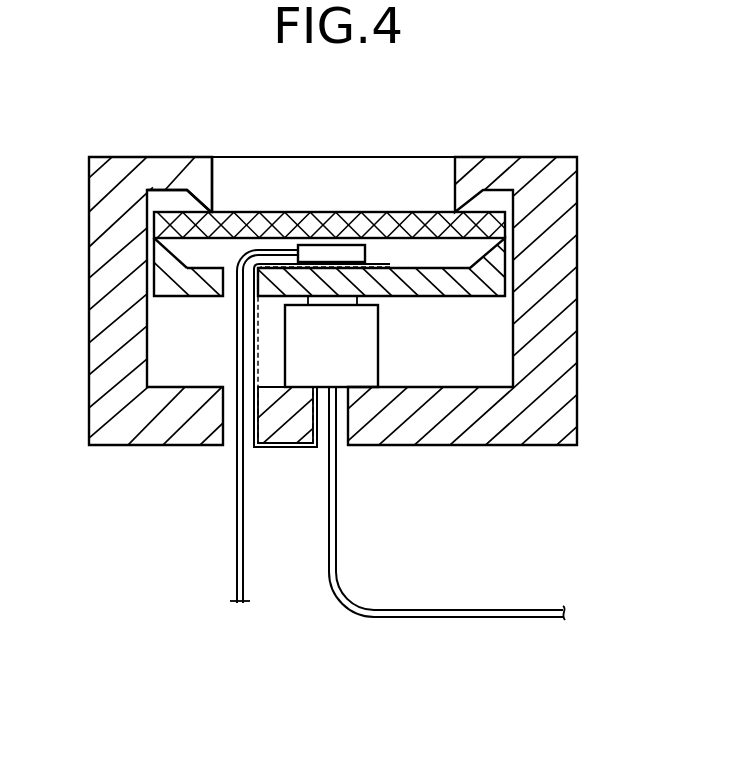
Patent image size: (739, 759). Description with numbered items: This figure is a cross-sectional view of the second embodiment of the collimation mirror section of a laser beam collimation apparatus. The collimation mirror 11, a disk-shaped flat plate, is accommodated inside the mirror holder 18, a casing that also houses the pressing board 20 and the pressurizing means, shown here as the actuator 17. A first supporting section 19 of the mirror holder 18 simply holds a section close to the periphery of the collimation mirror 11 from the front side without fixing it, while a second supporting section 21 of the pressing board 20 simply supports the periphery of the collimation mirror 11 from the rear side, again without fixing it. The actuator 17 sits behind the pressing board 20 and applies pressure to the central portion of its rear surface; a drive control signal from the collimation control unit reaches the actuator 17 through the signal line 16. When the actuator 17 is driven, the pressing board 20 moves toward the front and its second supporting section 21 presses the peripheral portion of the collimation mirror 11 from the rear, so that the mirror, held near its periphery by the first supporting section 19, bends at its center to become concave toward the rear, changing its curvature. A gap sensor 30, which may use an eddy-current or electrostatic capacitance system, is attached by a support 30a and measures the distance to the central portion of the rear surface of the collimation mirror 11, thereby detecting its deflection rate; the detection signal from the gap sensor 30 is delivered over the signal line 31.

The collimation mirror 11 is at (298, 216).
The signal line 16 is at (461, 608).
The actuator 17 is at (378, 353).
The mirror holder 18 is at (531, 215).
The first supporting section 19 is at (203, 192).
The pressing board 20 is at (498, 274).
The second supporting section 21 is at (160, 253).
The gap sensor 30 is at (366, 262).
The support 30a is at (283, 448).
The signal line 31 is at (237, 524).